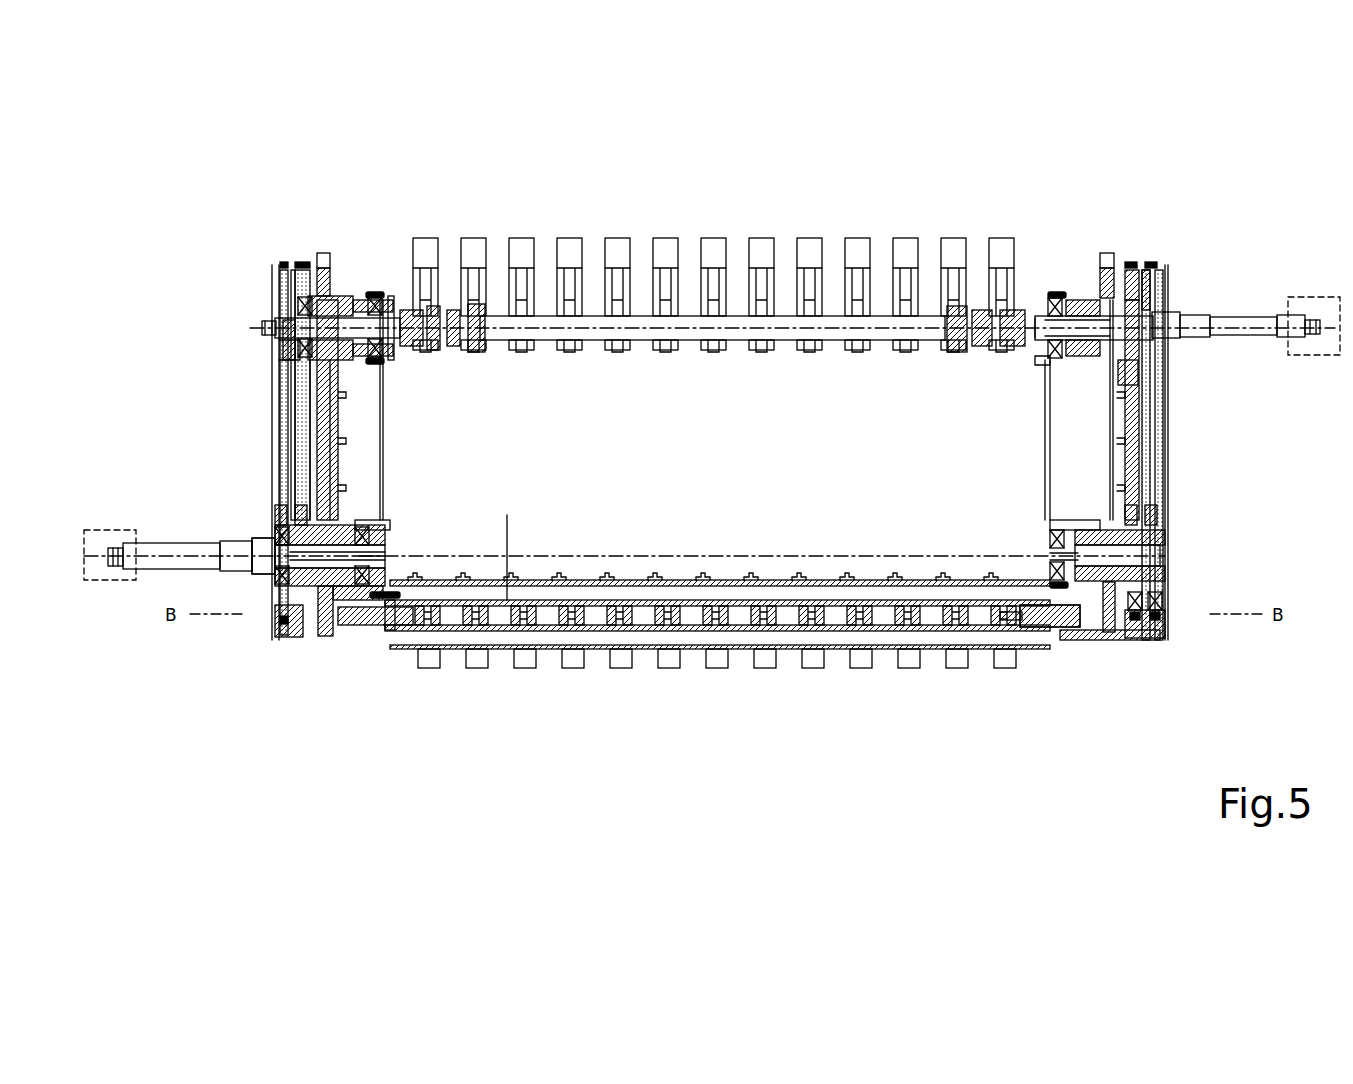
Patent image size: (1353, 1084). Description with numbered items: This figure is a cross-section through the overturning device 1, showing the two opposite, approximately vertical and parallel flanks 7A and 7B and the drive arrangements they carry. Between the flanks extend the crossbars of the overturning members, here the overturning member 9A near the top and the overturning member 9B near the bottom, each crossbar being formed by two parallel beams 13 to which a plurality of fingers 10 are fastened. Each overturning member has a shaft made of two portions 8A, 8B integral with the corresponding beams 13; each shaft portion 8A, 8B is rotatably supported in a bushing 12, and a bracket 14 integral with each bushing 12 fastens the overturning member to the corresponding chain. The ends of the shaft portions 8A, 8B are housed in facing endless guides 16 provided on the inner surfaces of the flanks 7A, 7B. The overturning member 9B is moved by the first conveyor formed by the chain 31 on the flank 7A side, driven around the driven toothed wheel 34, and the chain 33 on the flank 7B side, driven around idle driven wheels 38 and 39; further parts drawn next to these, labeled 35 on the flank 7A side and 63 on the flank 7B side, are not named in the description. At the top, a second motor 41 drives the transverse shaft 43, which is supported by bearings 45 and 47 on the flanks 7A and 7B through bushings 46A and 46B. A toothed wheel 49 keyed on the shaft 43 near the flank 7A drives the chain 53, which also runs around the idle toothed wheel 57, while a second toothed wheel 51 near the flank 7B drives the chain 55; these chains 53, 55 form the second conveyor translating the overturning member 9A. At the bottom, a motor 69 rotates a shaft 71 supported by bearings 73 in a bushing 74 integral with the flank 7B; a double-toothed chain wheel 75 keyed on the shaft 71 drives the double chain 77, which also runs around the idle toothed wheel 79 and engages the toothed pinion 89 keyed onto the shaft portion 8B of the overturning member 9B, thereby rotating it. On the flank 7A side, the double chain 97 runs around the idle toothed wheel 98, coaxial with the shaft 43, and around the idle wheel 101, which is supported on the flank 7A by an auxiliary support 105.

The device 1 is at (345, 740).
The flank 7A is at (1140, 425).
The flank 7B is at (318, 470).
The shaft portion 8A is at (1052, 632).
The shaft portion 8B is at (438, 580).
The overturning member 9A is at (960, 225).
The overturning member 9B is at (900, 698).
The fingers 10 is at (622, 244).
The bushing 12 is at (360, 628).
The beams 13 is at (508, 548).
The bracket 14 is at (308, 640).
The endless guide 16 is at (330, 263).
The chain 31 is at (1152, 262).
The chain 33 is at (278, 270).
The driven toothed wheel 34 is at (1150, 600).
The spacer 35 is at (1150, 282).
The idle driven wheel 38 is at (277, 512).
The idle driven wheel 39 is at (280, 372).
The second motor 41 is at (1313, 356).
The transverse shaft 43 is at (598, 341).
The bearing 45 is at (1068, 358).
The bushing 46A is at (1080, 295).
The bushing 46B is at (340, 362).
The bearing 47 is at (335, 300).
The toothed wheel 49 is at (1140, 370).
The second toothed wheel 51 is at (308, 280).
The chain 53 is at (1131, 262).
The chain 55 is at (303, 262).
The idle toothed wheel 57 is at (1150, 510).
The bearing carrier 63 is at (330, 640).
The motor 69 is at (100, 582).
The shaft 71 is at (170, 540).
The bearings 73 is at (262, 542).
The bushing 74 is at (276, 535).
The toothed chain wheel 75 is at (385, 530).
The double chain 77 is at (375, 292).
The idle toothed wheel 79 is at (392, 300).
The toothed pinion 89 is at (390, 632).
The double chain 97 is at (1055, 292).
The idle toothed wheel 98 is at (1048, 362).
The idle wheel 101 is at (1052, 525).
The auxiliary support 105 is at (1100, 540).